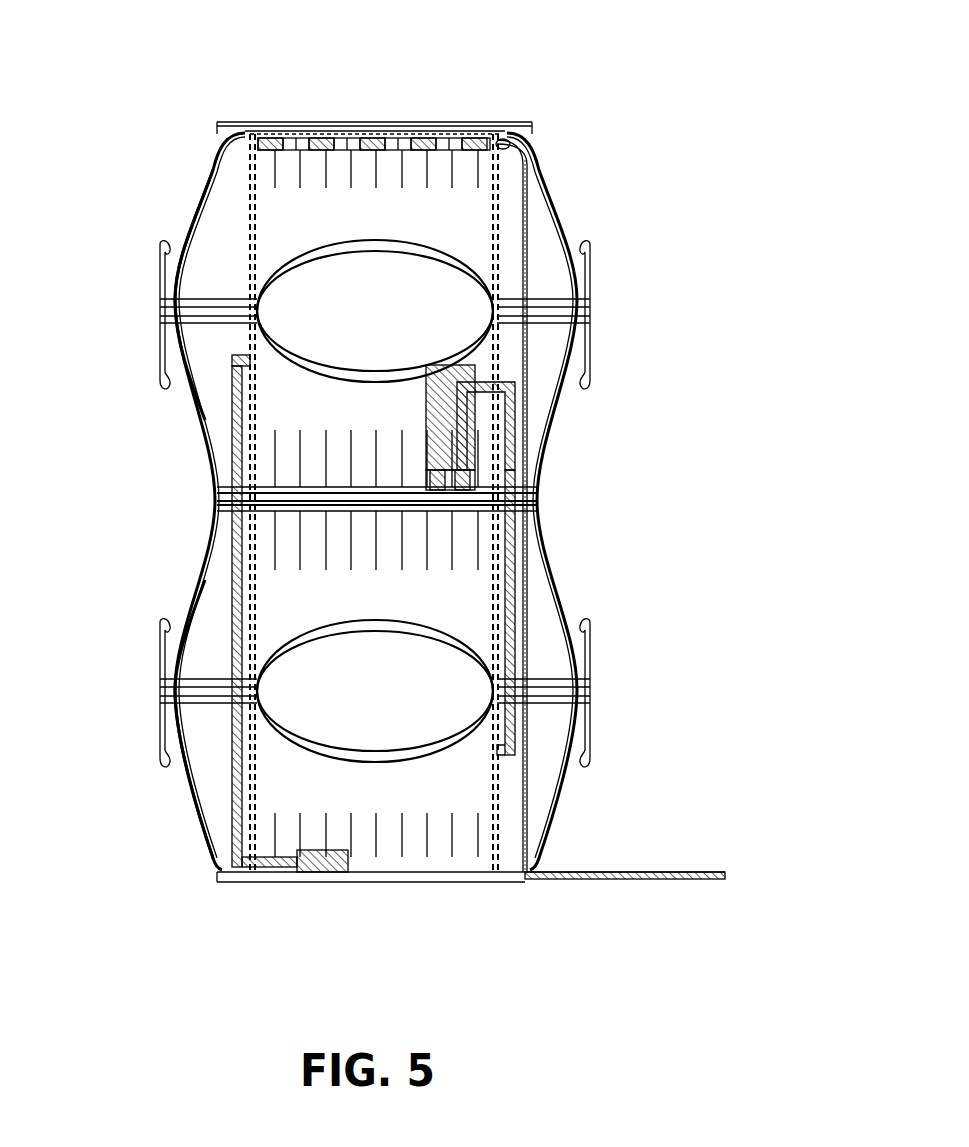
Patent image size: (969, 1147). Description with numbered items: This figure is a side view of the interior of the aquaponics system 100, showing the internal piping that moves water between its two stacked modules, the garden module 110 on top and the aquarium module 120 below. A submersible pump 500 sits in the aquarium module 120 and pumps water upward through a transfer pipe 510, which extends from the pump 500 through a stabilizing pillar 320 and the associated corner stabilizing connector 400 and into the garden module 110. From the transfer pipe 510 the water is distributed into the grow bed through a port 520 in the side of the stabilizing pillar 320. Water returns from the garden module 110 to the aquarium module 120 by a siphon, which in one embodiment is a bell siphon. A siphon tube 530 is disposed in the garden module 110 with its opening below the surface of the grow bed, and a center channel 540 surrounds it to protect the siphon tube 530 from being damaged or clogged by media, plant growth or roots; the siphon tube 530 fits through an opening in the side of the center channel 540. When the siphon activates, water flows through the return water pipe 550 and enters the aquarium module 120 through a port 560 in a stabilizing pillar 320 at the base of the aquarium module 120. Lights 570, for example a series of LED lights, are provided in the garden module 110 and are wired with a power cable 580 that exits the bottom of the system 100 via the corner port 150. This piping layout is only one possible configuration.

The aquaponics system 100 is at (518, 48).
The garden module 110 is at (130, 302).
The aquarium module 120 is at (130, 672).
The port 150 is at (528, 880).
The stabilizing pillar 320 is at (200, 383).
The stabilizing connector 400 is at (185, 315).
The submersible pump 500 is at (313, 873).
The transfer pipe 510 is at (232, 812).
The port 520 is at (250, 355).
The siphon tube 530 is at (500, 405).
The center channel 540 is at (500, 350).
The return water pipe 550 is at (513, 595).
The port 560 is at (500, 757).
The lights 570 is at (510, 138).
The power cable 580 is at (528, 208).